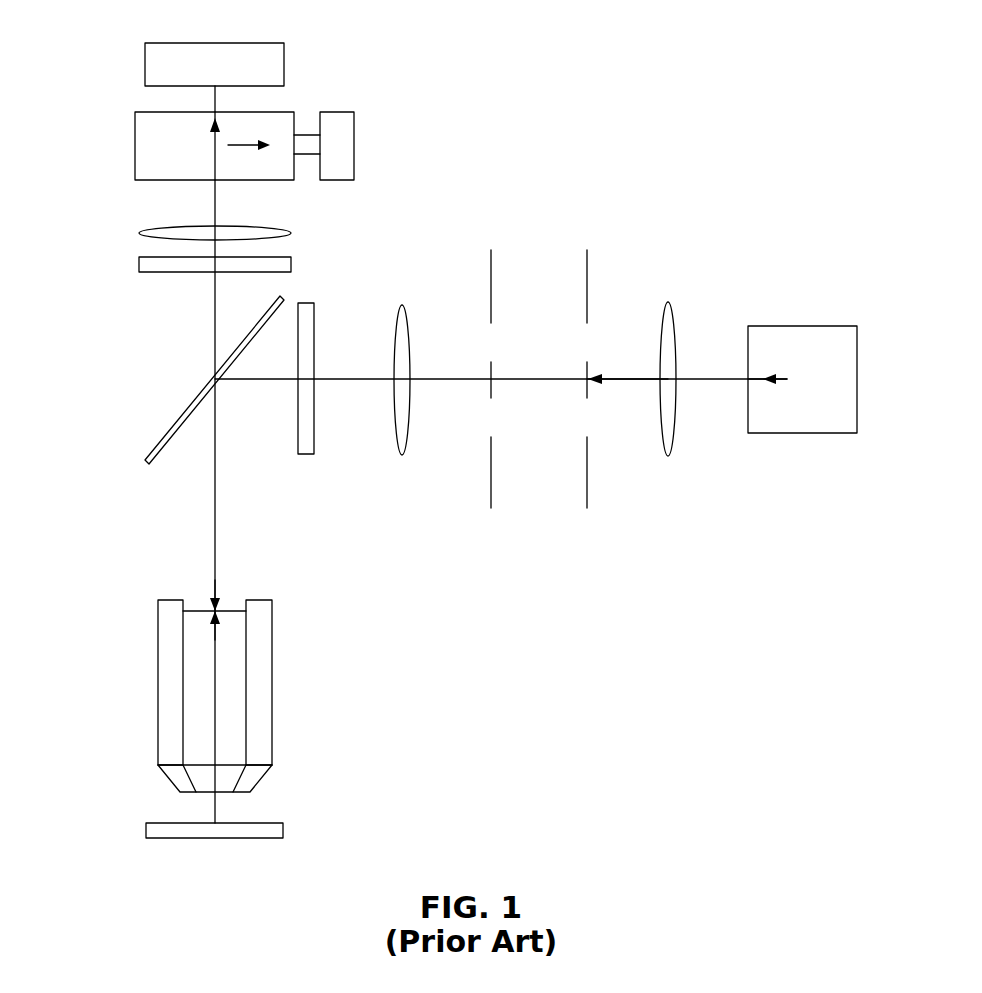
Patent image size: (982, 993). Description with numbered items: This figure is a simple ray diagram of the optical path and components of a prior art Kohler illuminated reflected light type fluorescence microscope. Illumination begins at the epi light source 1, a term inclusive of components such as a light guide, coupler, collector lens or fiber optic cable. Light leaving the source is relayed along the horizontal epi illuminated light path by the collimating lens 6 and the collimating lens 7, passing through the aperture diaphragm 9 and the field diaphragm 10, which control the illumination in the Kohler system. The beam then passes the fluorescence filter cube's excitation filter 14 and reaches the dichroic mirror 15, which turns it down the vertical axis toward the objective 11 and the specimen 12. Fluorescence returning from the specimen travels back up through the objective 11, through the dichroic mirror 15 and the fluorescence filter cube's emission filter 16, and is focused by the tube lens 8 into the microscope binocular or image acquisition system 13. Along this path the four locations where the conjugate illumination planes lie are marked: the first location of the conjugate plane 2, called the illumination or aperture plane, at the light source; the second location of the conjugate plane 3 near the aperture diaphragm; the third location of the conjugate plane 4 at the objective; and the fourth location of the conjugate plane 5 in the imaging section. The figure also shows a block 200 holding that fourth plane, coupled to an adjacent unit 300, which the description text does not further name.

The light source 1 is at (802, 326).
The first location of the conjugate plane 2 is at (773, 383).
The second location of the conjugate plane 3 is at (597, 383).
The third location of the conjugate plane 4 is at (213, 595).
The fourth location of the conjugate plane 5 is at (213, 139).
The collimating lens 6 is at (669, 305).
The collimating lens 7 is at (402, 305).
The tube lens 8 is at (242, 227).
The aperture diaphragm 9 is at (589, 285).
The field diaphragm 10 is at (493, 285).
The objective 11 is at (272, 683).
The specimen 12 is at (263, 823).
The microscope binocular or image acquisition system 13 is at (214, 43).
The excitation filter 14 is at (305, 454).
The dichroic mirror 15 is at (188, 407).
The emission filter 16 is at (139, 264).
The scanner unit 200 is at (135, 147).
The controller 300 is at (338, 112).